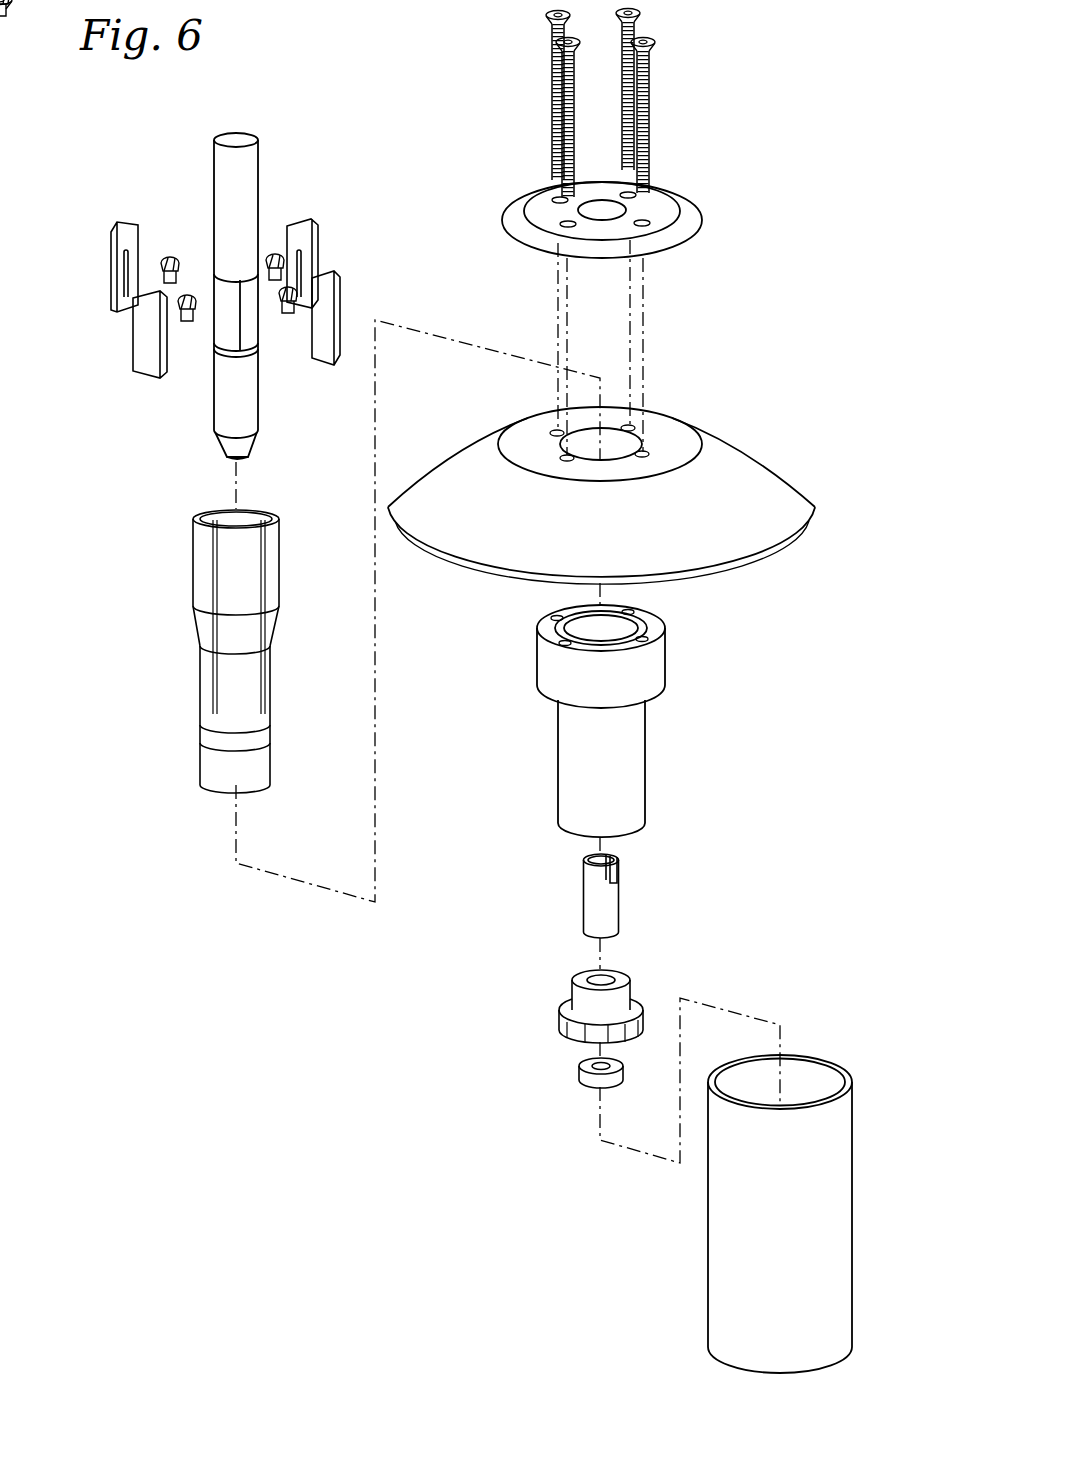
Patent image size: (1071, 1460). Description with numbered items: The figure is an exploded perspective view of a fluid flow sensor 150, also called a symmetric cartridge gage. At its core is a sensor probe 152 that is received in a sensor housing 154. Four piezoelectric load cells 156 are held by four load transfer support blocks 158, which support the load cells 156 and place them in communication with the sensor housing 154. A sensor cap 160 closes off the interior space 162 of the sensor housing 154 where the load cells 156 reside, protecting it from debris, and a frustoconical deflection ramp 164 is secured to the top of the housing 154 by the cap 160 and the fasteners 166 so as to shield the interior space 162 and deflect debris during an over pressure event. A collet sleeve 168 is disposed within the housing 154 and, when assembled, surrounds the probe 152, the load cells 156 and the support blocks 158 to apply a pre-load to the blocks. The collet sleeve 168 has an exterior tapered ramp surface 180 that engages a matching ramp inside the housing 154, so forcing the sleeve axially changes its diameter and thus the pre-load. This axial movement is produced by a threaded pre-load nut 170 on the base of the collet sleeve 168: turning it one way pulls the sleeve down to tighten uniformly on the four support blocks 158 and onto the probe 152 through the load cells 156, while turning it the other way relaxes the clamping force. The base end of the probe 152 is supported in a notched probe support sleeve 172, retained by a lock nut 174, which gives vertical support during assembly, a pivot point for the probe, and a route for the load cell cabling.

The fluid flow sensor 150 is at (808, 732).
The sensor probe 152 is at (258, 160).
The sensor housing 154 is at (639, 716).
The piezoelectric load cells 156 is at (173, 258).
The load transfer support blocks 158 is at (122, 225).
The sensor cap 160 is at (688, 204).
The interior space 162 is at (613, 630).
The deflection ramp 164 is at (737, 443).
The fasteners 166 is at (647, 123).
The collet sleeve 168 is at (194, 651).
The pre-load nut 170 is at (572, 984).
The probe support sleeve 172 is at (620, 905).
The lock nut 174 is at (588, 1090).
The exterior tapered ramp surface 180 is at (207, 624).